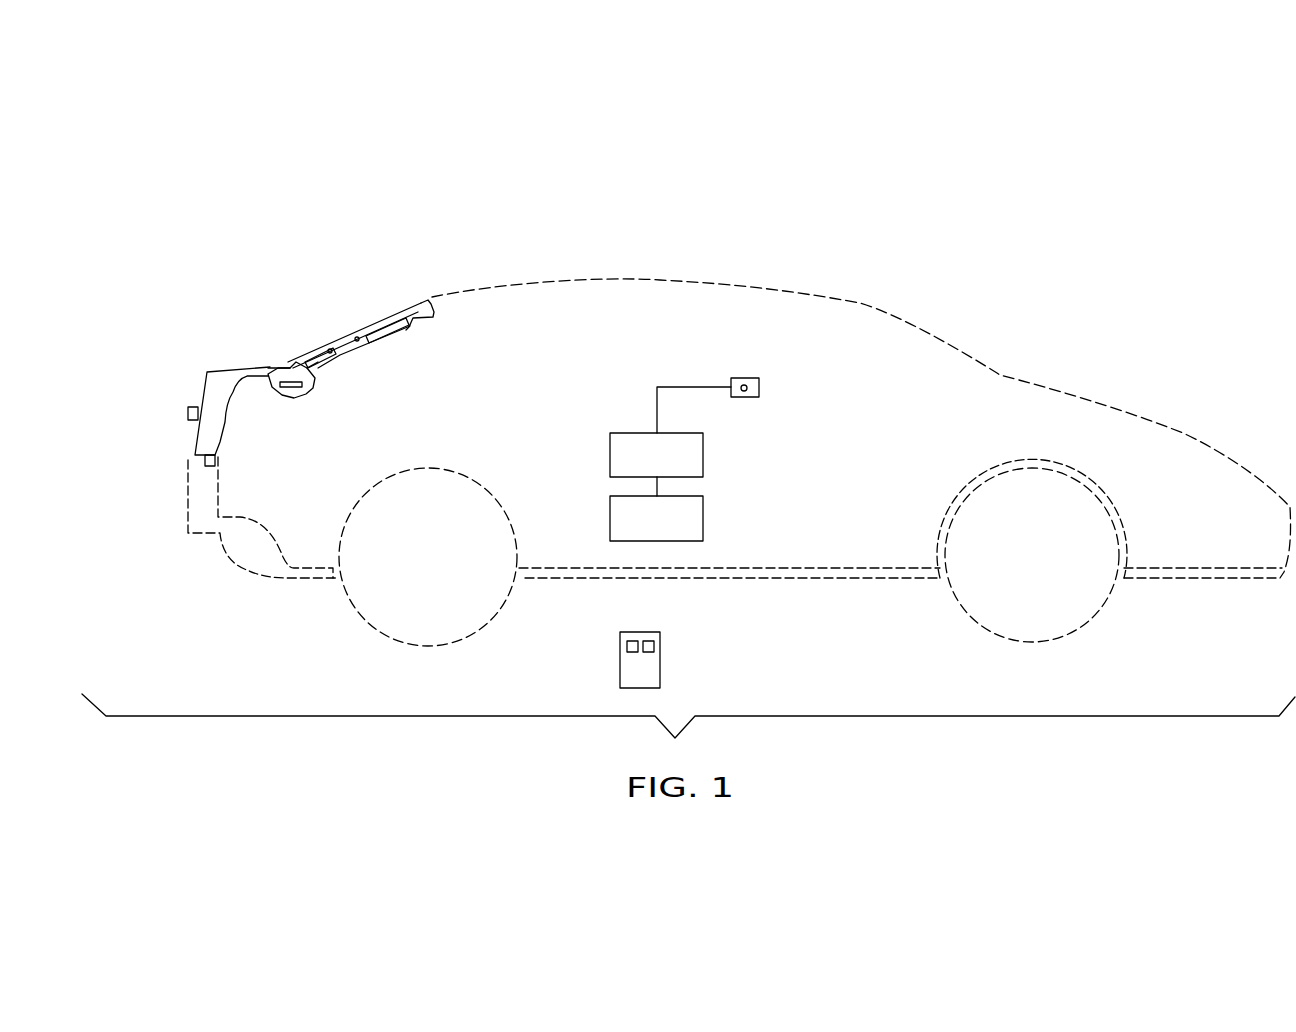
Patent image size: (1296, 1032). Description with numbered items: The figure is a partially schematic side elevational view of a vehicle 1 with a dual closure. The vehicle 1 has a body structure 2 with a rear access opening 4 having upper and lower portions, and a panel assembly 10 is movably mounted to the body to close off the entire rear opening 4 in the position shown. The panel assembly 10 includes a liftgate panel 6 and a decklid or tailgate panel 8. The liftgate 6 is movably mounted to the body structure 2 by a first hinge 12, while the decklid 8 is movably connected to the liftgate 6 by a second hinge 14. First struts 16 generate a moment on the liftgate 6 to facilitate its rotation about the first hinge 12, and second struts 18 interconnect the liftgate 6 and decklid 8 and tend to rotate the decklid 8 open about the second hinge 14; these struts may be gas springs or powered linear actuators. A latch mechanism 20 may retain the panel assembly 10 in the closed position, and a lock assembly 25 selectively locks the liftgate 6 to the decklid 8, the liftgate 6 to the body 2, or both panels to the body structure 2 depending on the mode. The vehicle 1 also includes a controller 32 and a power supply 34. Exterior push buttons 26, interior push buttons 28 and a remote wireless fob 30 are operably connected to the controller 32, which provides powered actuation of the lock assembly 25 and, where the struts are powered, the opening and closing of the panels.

The vehicle 1 is at (918, 278).
The body structure 2 is at (690, 278).
The rear access opening 4 is at (277, 340).
The liftgate panel 6 is at (382, 307).
The decklid or tailgate panel 8 is at (221, 371).
The panel assembly 10 is at (318, 343).
The first hinge 12 is at (424, 298).
The second hinge 14 is at (288, 398).
The first struts 16 is at (373, 341).
The second struts 18 is at (321, 366).
The latch mechanism 20 is at (207, 466).
The lock assembly 25 is at (286, 392).
The exterior push buttons 26 is at (190, 411).
The interior push buttons 28 is at (759, 378).
The remote wireless fob 30 is at (660, 668).
The controller 32 is at (693, 457).
The power supply 34 is at (697, 521).